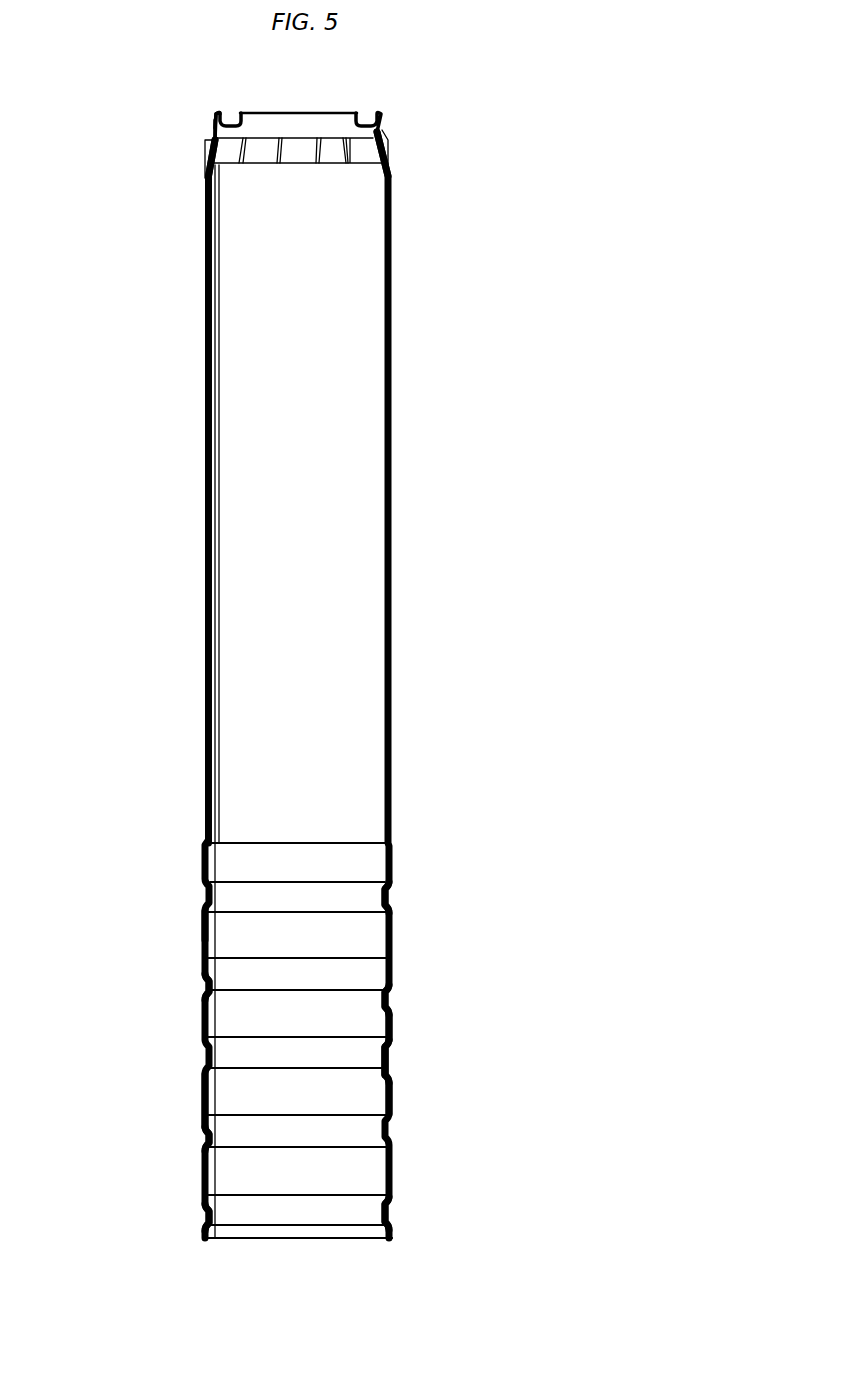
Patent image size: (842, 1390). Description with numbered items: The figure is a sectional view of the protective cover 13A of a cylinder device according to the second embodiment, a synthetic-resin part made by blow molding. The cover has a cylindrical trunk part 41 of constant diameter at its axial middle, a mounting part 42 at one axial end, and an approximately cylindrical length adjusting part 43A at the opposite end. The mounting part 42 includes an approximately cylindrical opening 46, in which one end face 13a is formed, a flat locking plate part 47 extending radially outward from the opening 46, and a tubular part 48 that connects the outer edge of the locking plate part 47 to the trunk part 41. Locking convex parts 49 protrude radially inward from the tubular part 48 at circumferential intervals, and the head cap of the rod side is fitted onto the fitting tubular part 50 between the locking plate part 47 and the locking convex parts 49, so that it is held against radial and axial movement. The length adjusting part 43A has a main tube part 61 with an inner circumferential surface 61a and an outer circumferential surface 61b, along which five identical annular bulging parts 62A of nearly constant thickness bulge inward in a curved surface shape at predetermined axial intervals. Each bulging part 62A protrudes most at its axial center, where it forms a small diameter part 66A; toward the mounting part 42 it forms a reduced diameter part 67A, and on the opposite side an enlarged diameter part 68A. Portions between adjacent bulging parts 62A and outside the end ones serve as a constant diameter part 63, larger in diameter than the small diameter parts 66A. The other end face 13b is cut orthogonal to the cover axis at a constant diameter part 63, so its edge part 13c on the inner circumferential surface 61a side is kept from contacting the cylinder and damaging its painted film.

The protective cover 13A is at (519, 135).
The end face 13a is at (366, 112).
The end face 13b is at (394, 1240).
The edge part 13c is at (207, 1240).
The trunk part 41 is at (393, 398).
The mounting part 42 is at (389, 122).
The length adjusting part 43A is at (400, 871).
The opening 46 is at (240, 110).
The locking plate part 47 is at (228, 115).
The tubular part 48 is at (390, 147).
The locking convex parts 49 is at (228, 140).
The fitting tubular part 50 is at (212, 125).
The main tube part 61 is at (202, 856).
The inner circumferential surface 61a is at (215, 865).
The outer circumferential surface 61b is at (203, 930).
The bulging parts 62A is at (366, 903).
The constant diameter part 63 is at (386, 1005).
The small diameter part 66A is at (380, 1088).
The reduced diameter part 67A is at (380, 1025).
The enlarged diameter part 68A is at (375, 1062).